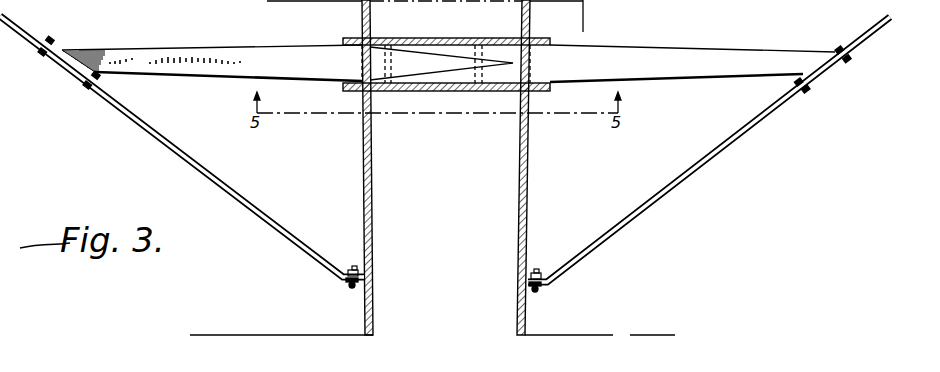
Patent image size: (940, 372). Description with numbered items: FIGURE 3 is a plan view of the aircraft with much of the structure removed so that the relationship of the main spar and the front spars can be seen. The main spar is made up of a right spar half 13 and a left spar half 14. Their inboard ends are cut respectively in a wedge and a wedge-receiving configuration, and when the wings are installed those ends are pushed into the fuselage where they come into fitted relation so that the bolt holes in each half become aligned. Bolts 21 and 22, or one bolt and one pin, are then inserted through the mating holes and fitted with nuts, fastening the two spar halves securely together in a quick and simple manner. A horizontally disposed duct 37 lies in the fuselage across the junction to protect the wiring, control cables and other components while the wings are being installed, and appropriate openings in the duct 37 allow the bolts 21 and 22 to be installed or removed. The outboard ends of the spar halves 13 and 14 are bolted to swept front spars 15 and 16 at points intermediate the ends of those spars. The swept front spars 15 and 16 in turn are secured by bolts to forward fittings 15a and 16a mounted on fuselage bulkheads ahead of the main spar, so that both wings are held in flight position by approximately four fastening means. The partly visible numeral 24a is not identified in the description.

The right spar half 13 is at (232, 51).
The left spar half 14 is at (716, 57).
The swept front spar 15 is at (290, 244).
The forward fitting 15a is at (350, 266).
The swept front spar 16 is at (767, 117).
The forward fitting 16a is at (541, 271).
The bolt 21 is at (390, 92).
The bolt 22 is at (482, 92).
The duct 37 is at (435, 38).
The upper member 24a is at (92, 3).